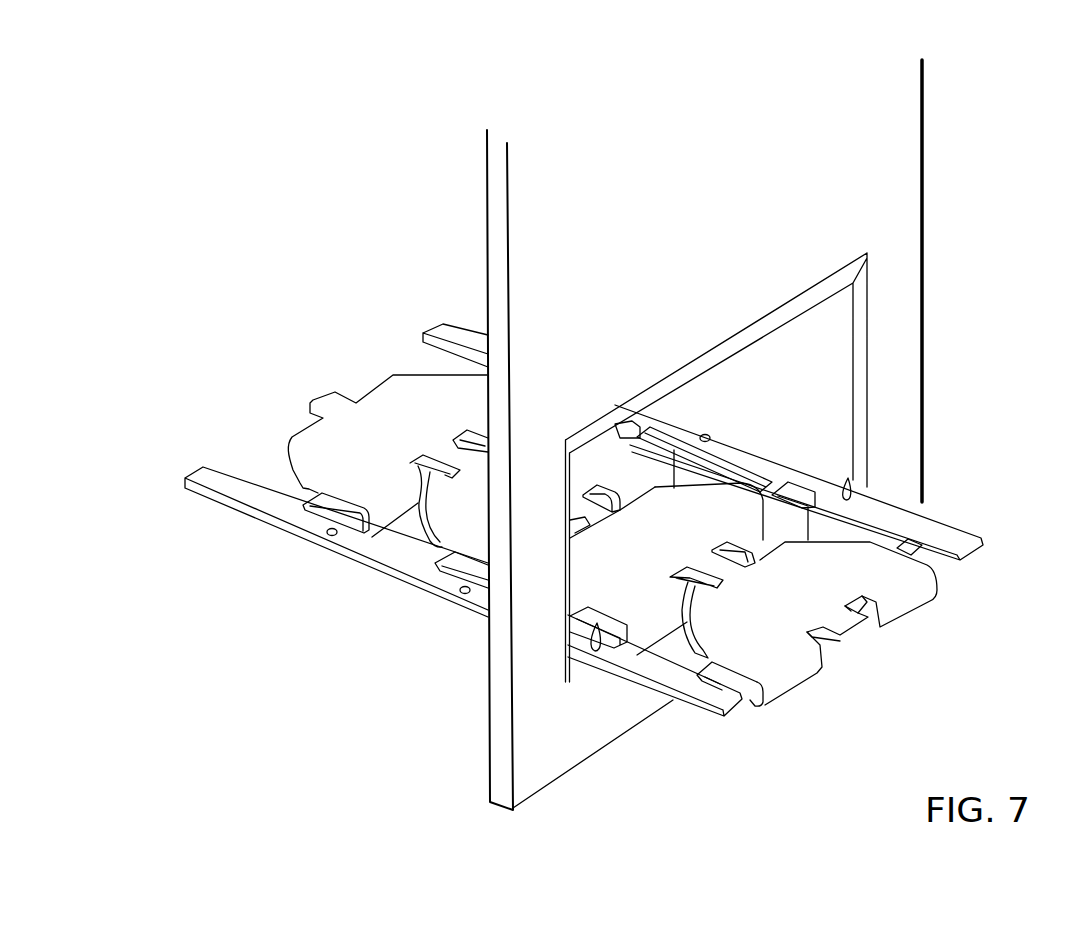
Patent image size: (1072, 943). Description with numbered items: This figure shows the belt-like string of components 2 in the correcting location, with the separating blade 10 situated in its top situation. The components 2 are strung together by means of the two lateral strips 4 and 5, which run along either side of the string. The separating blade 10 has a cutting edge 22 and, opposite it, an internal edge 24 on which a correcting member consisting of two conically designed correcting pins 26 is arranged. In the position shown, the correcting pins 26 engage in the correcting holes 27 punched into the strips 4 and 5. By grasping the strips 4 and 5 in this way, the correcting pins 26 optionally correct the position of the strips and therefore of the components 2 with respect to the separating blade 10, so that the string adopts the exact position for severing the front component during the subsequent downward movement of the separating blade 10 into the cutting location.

The component 2 is at (393, 400).
The lateral strip 4 is at (445, 330).
The lateral strip 5 is at (204, 481).
The separating blade 10 is at (520, 204).
The cutting edge 22 is at (807, 313).
The internal edge 24 is at (577, 667).
The correcting pin 26 is at (857, 480).
The hole 27 is at (332, 538).